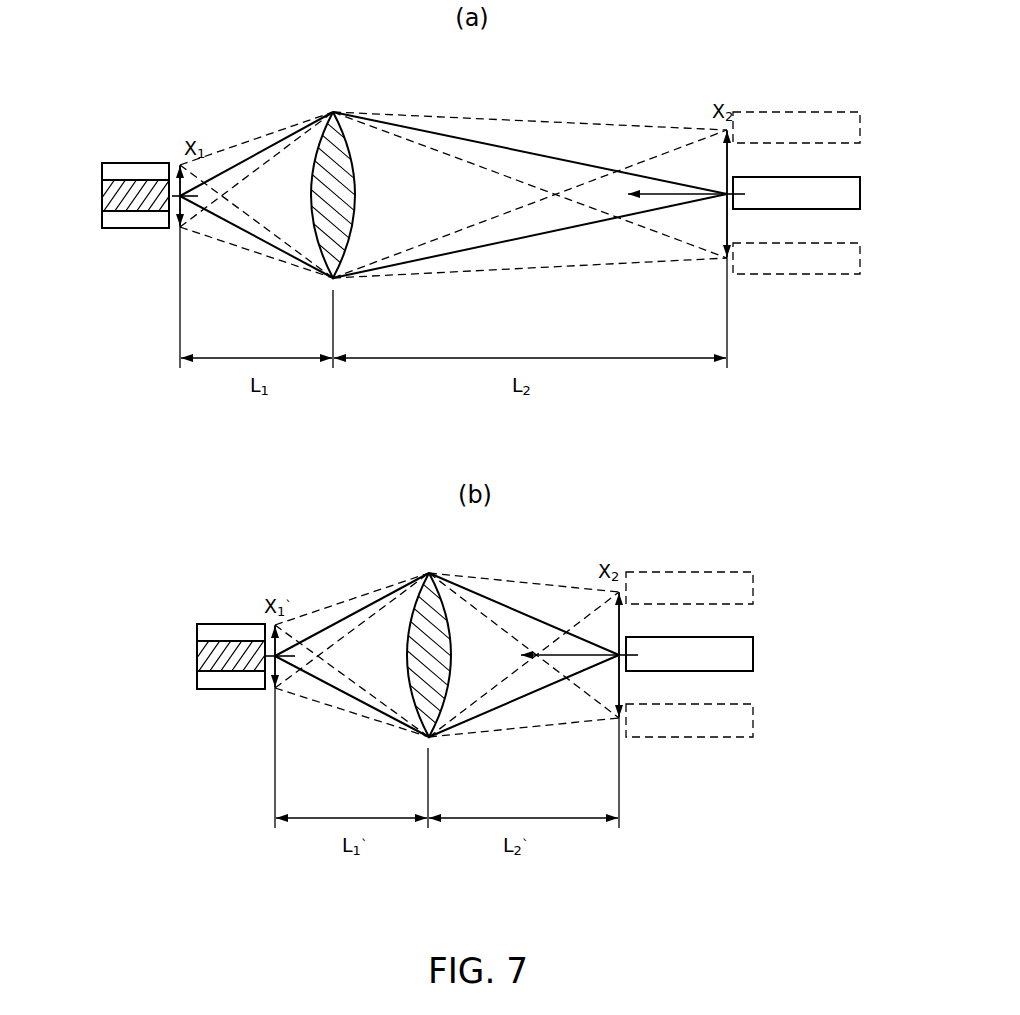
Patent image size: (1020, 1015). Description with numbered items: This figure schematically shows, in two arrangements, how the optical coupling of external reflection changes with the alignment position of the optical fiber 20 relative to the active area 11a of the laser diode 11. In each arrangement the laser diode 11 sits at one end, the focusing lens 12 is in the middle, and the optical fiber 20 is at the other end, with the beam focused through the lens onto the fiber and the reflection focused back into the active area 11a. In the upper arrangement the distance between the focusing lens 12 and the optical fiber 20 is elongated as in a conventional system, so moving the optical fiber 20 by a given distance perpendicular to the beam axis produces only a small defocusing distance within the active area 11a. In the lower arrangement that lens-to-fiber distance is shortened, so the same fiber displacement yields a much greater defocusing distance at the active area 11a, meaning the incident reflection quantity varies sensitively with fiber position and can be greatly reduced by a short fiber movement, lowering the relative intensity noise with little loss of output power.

The laser diode 11 is at (128, 164).
The active area 11a is at (110, 196).
The focusing lens 12 is at (333, 110).
The optical fiber 20 is at (850, 197).